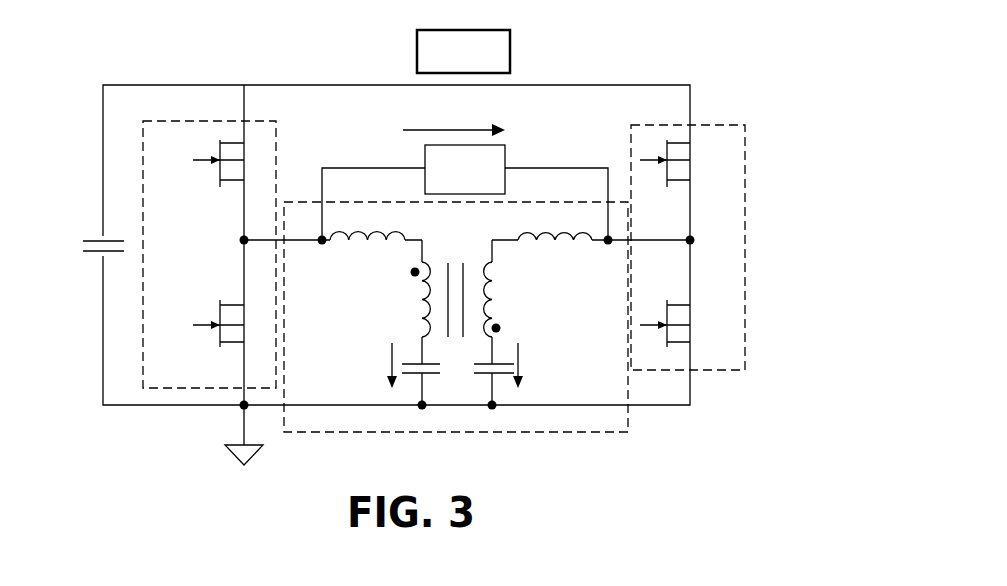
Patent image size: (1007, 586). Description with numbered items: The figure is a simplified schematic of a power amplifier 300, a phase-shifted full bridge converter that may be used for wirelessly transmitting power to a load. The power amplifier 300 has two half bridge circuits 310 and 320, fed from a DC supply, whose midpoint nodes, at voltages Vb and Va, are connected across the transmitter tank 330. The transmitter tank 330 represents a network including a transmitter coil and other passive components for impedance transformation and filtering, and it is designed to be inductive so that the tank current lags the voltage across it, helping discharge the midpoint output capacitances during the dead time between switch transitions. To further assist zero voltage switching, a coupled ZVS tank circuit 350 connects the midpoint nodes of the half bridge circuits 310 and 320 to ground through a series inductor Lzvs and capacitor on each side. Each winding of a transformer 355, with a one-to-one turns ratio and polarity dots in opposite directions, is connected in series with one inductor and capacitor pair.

The power amplifier 300 is at (411, 262).
The half bridge circuit 310 is at (745, 160).
The half bridge circuit 320 is at (143, 140).
The transmitter tank 330 is at (505, 153).
The ZVS tank circuit 350 is at (456, 354).
The transformer 355 is at (420, 309).